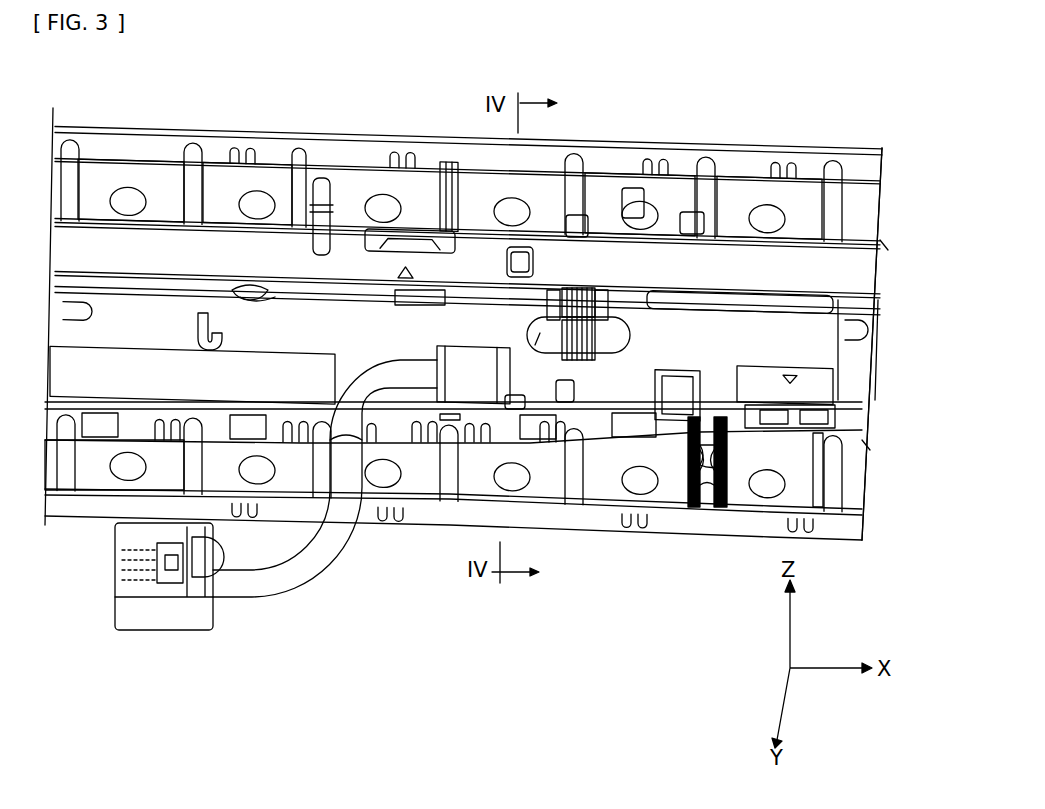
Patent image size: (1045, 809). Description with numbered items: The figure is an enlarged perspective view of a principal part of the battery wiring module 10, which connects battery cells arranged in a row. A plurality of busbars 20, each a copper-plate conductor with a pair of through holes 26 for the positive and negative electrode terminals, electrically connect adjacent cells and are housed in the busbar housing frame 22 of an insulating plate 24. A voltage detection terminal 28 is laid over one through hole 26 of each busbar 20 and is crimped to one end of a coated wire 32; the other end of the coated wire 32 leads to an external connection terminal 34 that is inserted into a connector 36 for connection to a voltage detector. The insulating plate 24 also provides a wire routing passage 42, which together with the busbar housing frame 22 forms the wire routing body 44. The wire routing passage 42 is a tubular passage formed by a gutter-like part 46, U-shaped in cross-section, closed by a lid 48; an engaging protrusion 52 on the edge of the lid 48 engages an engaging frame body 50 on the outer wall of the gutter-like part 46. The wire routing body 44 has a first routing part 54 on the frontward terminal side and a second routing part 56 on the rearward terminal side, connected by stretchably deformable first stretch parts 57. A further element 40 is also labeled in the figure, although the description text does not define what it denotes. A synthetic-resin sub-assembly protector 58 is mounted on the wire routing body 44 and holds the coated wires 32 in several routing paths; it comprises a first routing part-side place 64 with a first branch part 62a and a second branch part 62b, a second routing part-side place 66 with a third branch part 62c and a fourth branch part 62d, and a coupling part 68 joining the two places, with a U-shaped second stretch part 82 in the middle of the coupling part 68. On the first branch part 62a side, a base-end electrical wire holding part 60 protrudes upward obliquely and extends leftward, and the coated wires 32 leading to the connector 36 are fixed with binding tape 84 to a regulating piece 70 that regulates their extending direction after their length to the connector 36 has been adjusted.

The battery wiring module 10 is at (646, 98).
The busbar 20 is at (125, 178).
The busbar housing frame 22 is at (275, 157).
The insulating plate 24 is at (682, 122).
The through hole 26 is at (400, 200).
The voltage detection terminal 28 is at (630, 215).
The coated wire 32 is at (333, 400).
The external connection terminal 34 is at (120, 594).
The connector 36 is at (163, 655).
The locking member 40 is at (320, 188).
The wire routing passage 42 is at (651, 259).
The wire routing body 44 is at (938, 595).
The gutter-like part 46 is at (690, 358).
The lid 48 is at (850, 392).
The engaging frame body 50 is at (252, 290).
The engaging protrusion 52 is at (260, 296).
The first routing part 54 is at (877, 450).
The second routing part 56 is at (897, 253).
The first stretch part 57 is at (205, 333).
The sub-assembly protector 58 is at (565, 383).
The base-end electrical wire holding part 60 is at (347, 505).
The first branch part 62a is at (545, 335).
The second branch part 62b is at (690, 308).
The third branch part 62c is at (577, 205).
The fourth branch part 62d is at (685, 195).
The first routing part-side place 64 is at (515, 400).
The second routing part-side place 66 is at (632, 188).
The coupling part 68 is at (597, 375).
The regulating piece 70 is at (455, 418).
The second stretch part 82 is at (545, 333).
The binding tape 84 is at (472, 364).